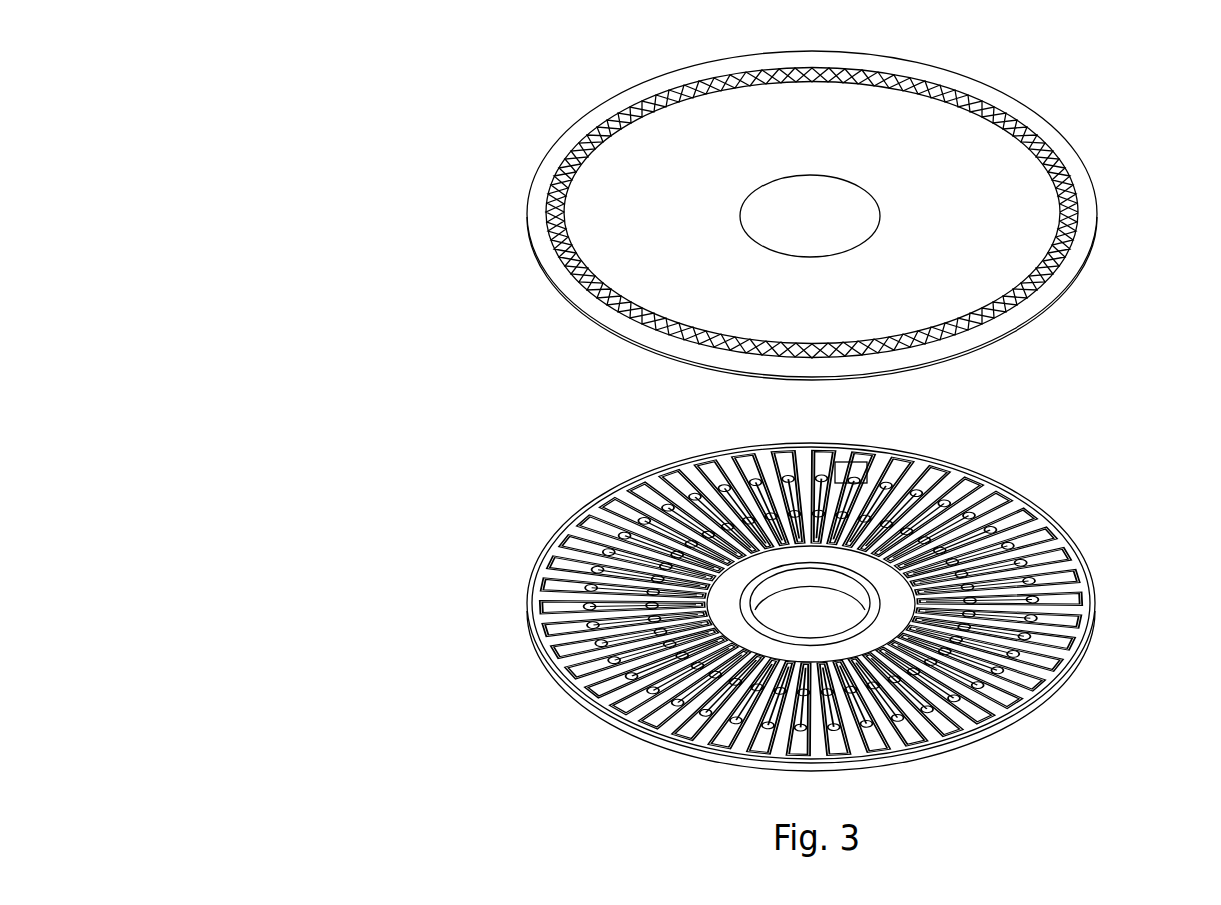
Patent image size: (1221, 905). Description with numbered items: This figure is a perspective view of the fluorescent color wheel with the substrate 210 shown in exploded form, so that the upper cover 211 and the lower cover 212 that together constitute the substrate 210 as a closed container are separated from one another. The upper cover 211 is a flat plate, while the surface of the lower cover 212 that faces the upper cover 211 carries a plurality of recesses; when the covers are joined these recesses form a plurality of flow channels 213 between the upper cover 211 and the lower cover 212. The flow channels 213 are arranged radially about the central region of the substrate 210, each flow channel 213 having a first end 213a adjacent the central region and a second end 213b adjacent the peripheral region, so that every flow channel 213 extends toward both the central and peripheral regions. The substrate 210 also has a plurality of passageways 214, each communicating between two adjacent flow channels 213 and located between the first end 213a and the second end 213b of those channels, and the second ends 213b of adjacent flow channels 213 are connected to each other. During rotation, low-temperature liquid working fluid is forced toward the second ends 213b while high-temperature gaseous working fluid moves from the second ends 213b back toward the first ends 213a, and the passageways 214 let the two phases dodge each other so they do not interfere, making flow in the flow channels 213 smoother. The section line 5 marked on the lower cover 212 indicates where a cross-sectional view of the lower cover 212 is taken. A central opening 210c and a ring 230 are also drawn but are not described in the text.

The substrate 210 is at (308, 672).
The upper cover 211 is at (528, 204).
The lower cover 212 is at (535, 646).
The central opening 210c is at (855, 181).
The annular sealing ring 230 is at (1077, 183).
The flow channels 213 is at (858, 504).
The first end 213a is at (845, 560).
The second end 213b is at (866, 448).
The passageways 214 is at (839, 462).
The line 5- 5 is at (852, 462).